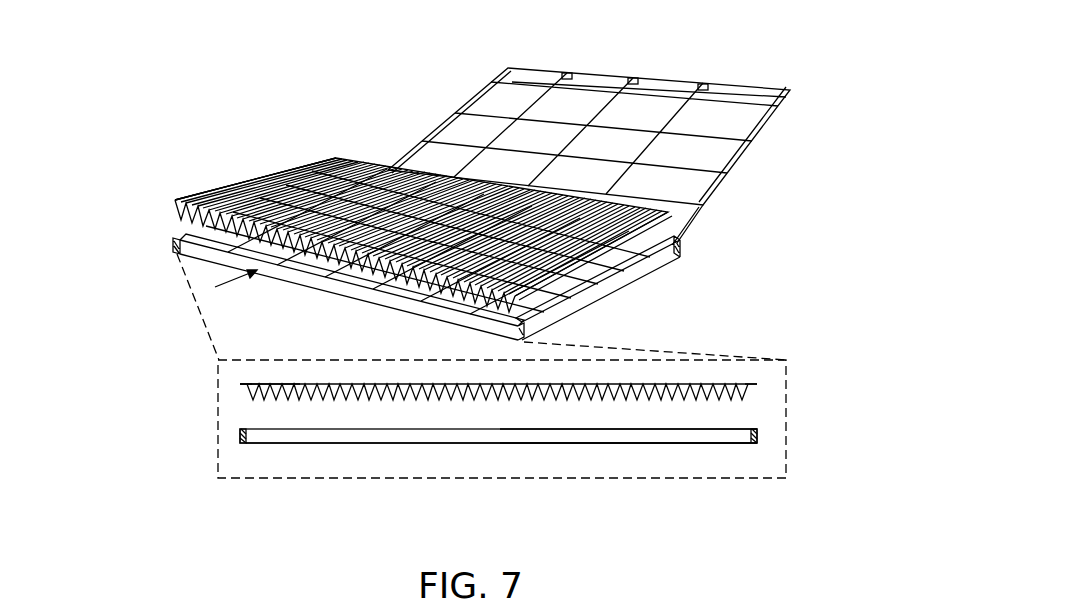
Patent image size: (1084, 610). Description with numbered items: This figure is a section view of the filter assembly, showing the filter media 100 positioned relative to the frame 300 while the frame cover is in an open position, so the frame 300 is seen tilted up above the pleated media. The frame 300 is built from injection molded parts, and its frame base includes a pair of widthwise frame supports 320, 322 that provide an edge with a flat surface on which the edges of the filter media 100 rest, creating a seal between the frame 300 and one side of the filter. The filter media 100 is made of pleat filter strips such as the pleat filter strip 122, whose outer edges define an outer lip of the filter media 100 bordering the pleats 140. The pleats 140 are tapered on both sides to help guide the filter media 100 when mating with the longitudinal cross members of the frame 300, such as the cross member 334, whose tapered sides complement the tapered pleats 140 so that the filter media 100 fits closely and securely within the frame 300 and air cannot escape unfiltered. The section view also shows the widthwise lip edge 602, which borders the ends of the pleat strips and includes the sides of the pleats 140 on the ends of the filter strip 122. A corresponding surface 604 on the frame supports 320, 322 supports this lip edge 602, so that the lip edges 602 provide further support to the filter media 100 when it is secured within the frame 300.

The frame 300 is at (390, 80).
The filter media 100 is at (262, 148).
The pleat filter strip 122 is at (228, 186).
The frame support 320 is at (200, 236).
The frame support 322 is at (647, 267).
The widthwise lip edge 602 is at (692, 211).
The pleats 140 is at (353, 382).
The corresponding surface 604 is at (244, 429).
The longitudinal cross member 334 is at (672, 435).